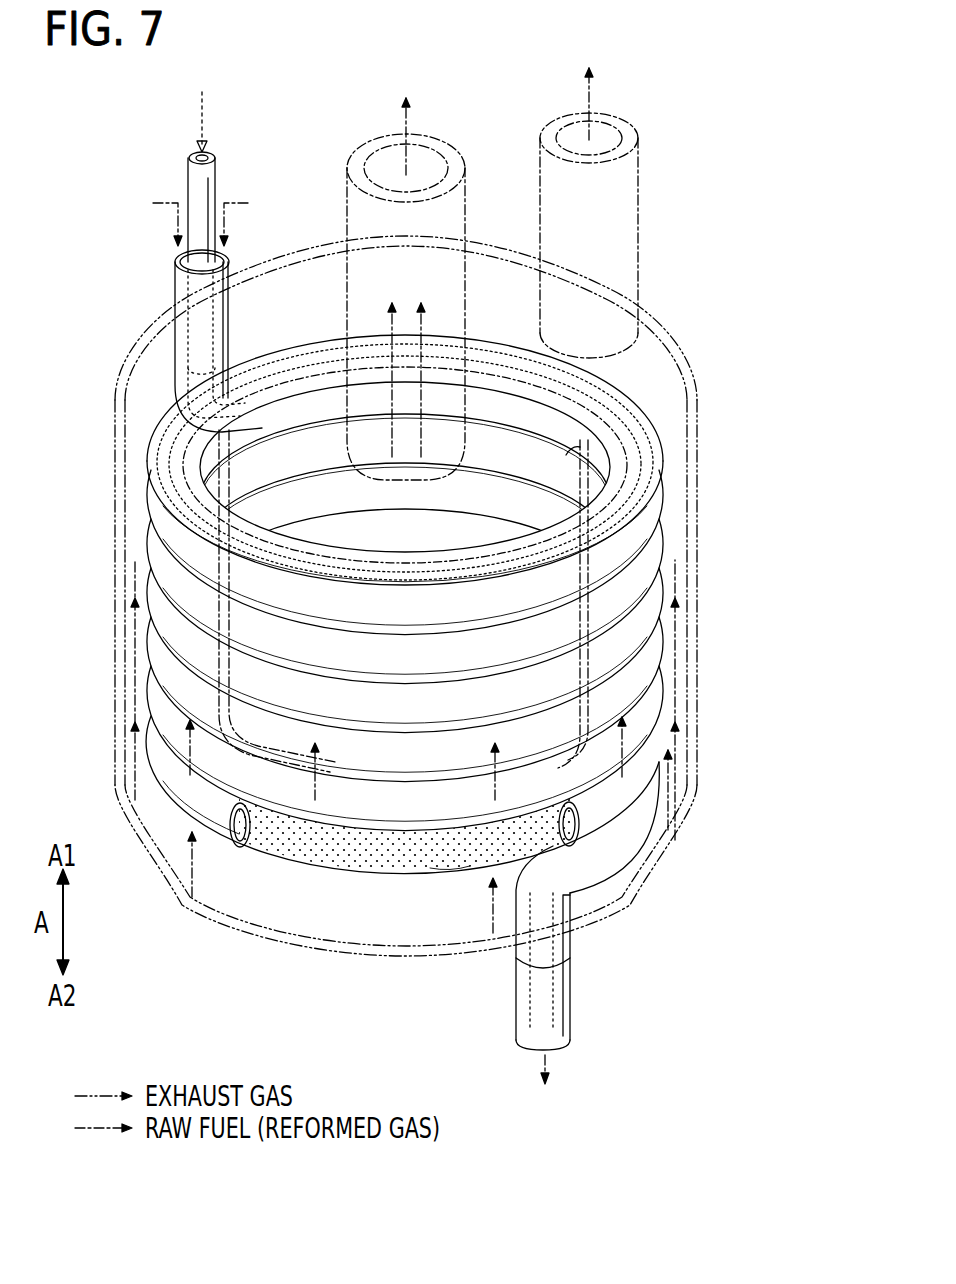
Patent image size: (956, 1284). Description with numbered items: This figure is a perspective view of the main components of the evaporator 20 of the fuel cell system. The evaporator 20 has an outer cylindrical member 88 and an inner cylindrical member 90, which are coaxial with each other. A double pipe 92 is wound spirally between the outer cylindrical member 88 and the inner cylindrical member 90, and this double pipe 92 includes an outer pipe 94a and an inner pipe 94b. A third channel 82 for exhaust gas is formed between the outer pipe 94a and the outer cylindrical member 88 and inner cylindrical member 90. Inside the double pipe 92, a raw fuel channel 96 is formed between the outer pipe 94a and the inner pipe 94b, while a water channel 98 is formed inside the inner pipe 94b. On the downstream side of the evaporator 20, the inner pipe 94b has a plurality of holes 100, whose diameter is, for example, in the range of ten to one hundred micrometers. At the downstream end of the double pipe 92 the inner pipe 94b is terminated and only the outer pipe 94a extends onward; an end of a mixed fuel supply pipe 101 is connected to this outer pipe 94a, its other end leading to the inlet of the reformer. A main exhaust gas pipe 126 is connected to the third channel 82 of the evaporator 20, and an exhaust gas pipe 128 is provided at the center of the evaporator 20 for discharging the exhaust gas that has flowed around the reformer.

The evaporator 20 is at (300, 155).
The third channel 82 is at (130, 648).
The outer cylindrical member 88 is at (700, 548).
The inner cylindrical member 90 is at (576, 466).
The double pipe 92 is at (166, 331).
The outer pipe 94a is at (150, 545).
The inner pipe 94b is at (378, 866).
The raw fuel channel 96 is at (248, 846).
The water channel 98 is at (450, 870).
The holes 100 is at (347, 858).
The mixed fuel supply pipe 101 is at (545, 1000).
The main exhaust gas pipe 126 is at (633, 224).
The exhaust gas pipe 128 is at (348, 215).